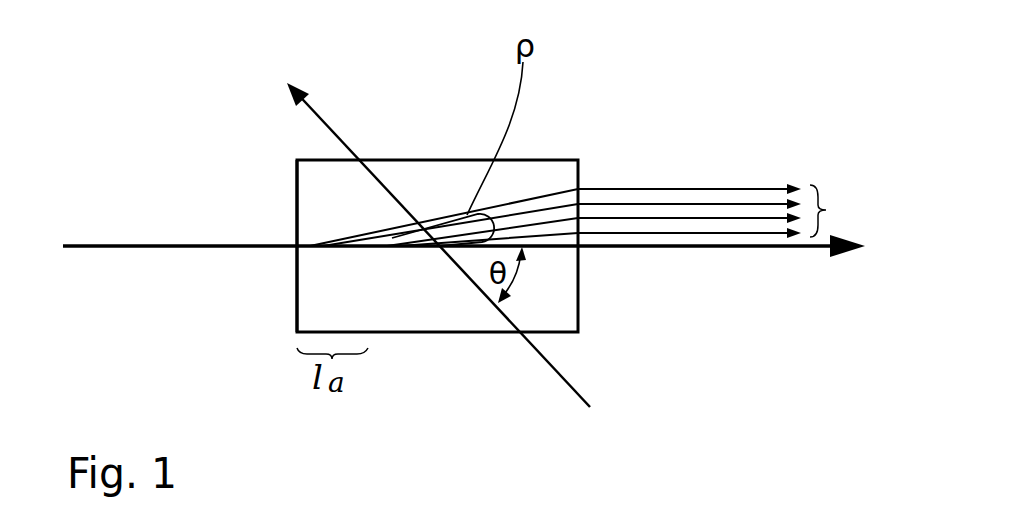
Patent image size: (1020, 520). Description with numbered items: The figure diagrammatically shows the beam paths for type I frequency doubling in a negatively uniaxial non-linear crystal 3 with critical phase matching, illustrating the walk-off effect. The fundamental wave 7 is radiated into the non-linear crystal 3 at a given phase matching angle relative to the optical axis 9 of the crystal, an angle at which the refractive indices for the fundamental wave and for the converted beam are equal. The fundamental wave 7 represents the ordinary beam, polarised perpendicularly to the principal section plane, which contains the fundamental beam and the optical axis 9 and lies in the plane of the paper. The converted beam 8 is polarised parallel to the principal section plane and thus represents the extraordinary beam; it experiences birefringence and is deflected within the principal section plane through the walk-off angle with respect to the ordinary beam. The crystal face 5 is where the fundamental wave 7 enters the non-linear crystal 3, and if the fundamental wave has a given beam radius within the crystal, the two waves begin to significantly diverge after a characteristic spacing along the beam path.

The non-linear crystal 3 is at (432, 175).
The input face of crystal 5 is at (296, 178).
The fundamental wave 7 is at (170, 242).
The converted beam 8 is at (826, 212).
The optical axis 9 is at (330, 127).